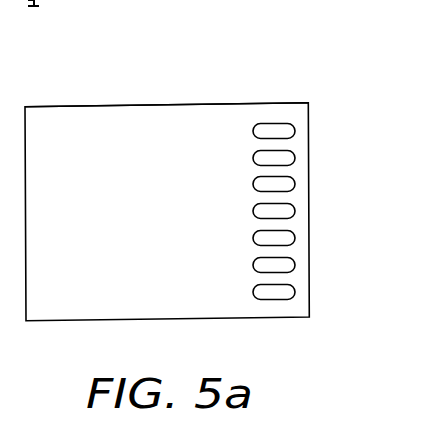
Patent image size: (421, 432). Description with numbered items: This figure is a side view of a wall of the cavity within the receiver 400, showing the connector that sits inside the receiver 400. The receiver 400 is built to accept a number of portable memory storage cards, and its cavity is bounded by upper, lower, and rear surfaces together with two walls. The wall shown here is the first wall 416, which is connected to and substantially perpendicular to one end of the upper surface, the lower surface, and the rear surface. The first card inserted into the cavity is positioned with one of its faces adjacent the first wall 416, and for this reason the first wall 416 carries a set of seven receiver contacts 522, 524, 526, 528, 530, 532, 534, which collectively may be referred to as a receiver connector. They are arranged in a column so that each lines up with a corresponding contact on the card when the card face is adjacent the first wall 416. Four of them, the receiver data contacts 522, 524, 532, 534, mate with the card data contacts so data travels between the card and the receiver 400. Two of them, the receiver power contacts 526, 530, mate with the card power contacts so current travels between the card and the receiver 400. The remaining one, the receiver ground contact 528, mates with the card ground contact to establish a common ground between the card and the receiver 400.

The receiver 400 is at (153, 80).
The first wall 416 is at (213, 123).
The fourth receiver contact 522 is at (295, 130).
The third receiver contact 524 is at (295, 157).
The sixth receiver contact 526 is at (295, 183).
The seventh receiver contact 528 is at (295, 210).
The fifth receiver contact 530 is at (295, 237).
The second receiver contact 532 is at (295, 264).
The first receiver contact 534 is at (295, 291).